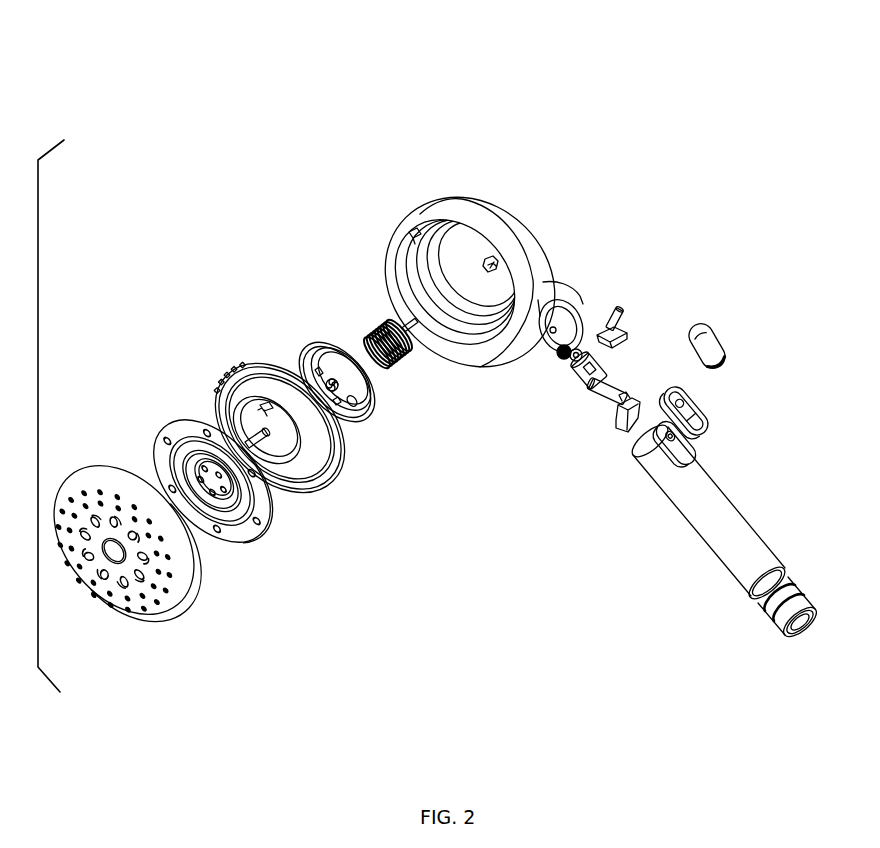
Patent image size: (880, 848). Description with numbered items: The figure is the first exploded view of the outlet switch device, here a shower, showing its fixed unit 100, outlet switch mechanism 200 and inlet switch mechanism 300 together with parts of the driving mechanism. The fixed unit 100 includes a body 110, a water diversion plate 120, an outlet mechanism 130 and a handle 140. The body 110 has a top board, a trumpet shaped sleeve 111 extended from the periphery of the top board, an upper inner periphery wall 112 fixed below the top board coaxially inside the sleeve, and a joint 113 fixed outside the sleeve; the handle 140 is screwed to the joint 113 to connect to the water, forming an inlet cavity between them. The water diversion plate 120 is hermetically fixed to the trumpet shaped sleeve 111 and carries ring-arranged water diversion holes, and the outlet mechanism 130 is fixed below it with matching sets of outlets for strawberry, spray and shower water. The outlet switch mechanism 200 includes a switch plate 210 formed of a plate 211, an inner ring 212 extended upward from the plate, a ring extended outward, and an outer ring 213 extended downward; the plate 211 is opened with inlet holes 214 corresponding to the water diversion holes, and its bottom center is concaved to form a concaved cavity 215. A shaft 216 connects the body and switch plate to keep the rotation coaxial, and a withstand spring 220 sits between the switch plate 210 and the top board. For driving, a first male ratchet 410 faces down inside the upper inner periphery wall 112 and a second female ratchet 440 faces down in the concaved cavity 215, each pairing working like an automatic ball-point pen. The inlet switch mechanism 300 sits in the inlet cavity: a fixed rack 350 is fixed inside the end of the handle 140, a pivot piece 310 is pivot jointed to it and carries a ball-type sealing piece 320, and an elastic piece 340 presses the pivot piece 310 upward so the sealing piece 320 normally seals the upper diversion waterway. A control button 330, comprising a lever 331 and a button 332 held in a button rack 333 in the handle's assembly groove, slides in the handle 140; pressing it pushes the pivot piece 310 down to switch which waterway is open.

The fixed unit 100 is at (452, 148).
The body 110 is at (517, 208).
The trumpet shaped sleeve 111 is at (440, 205).
The upper inner periphery wall 112 is at (450, 265).
The joint 113 is at (588, 284).
The first male ratchet 410 is at (492, 262).
The water diversion plate 120 is at (222, 390).
The outlet mechanism 130 is at (131, 446).
The handle 140 is at (710, 490).
The outlet switch mechanism 200 is at (232, 345).
The switch plate 210 is at (289, 304).
The plate 211 is at (330, 358).
The inner ring 212 is at (352, 392).
The outer ring 213 is at (322, 358).
The inlet holes 214 is at (313, 386).
The concaved cavity 215 is at (330, 393).
The shaft 216 is at (407, 322).
The withstand spring 220 is at (411, 338).
The second female ratchet 440 is at (356, 402).
The inlet switch mechanism 300 is at (661, 332).
The pivot piece 310 is at (597, 403).
The sealing piece 320 is at (572, 362).
The control button 330 is at (733, 349).
The lever 331 is at (622, 316).
The button 332 is at (700, 350).
The button rack 333 is at (700, 403).
The elastic piece 340 is at (560, 362).
The fixed rack 350 is at (622, 426).